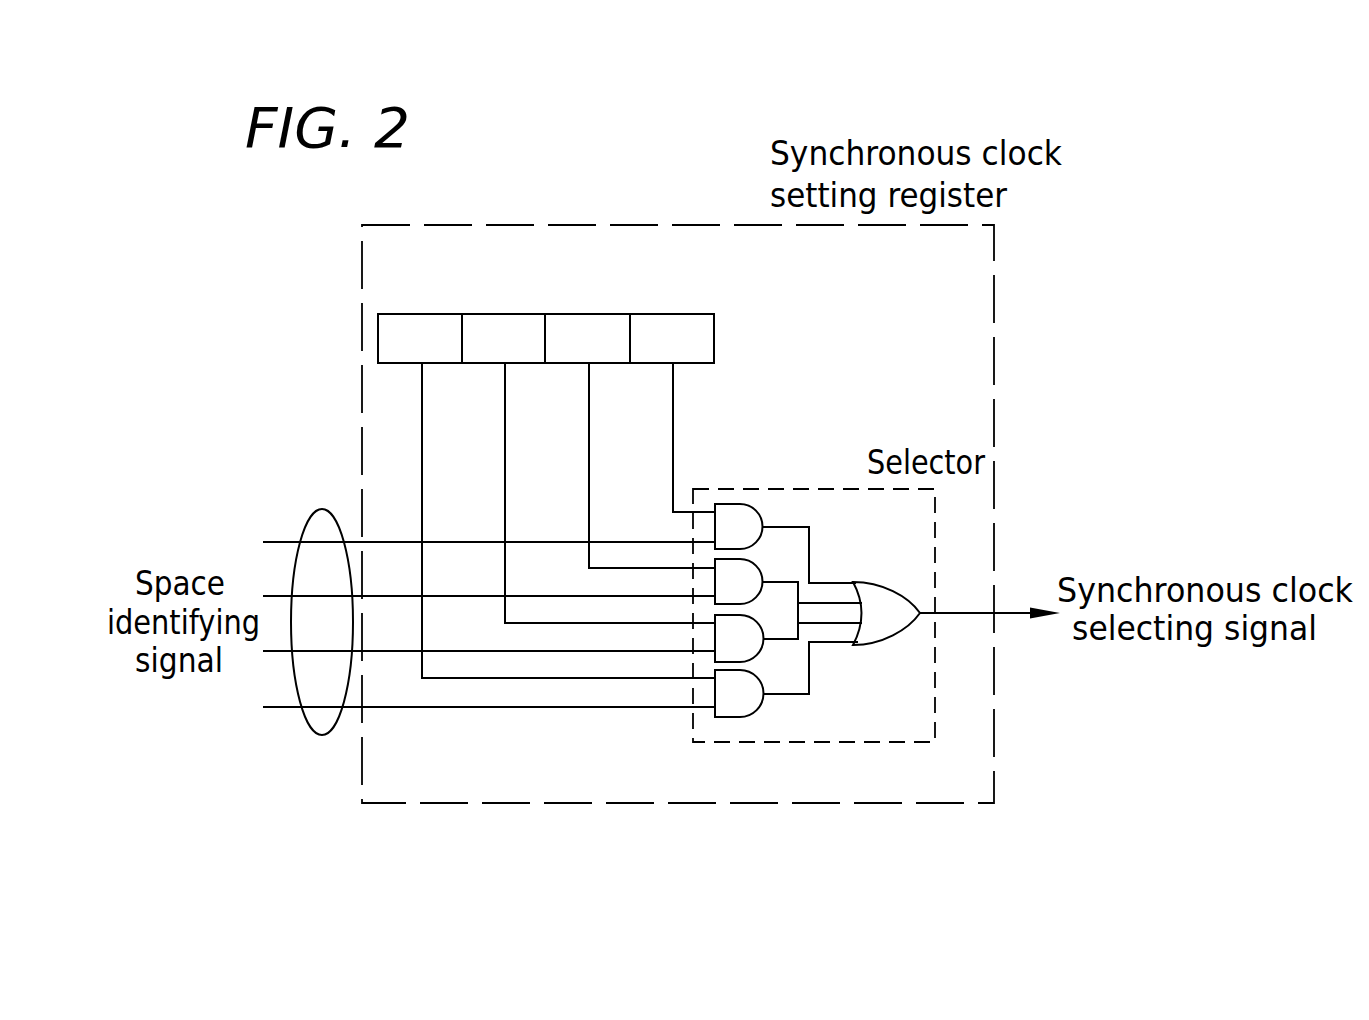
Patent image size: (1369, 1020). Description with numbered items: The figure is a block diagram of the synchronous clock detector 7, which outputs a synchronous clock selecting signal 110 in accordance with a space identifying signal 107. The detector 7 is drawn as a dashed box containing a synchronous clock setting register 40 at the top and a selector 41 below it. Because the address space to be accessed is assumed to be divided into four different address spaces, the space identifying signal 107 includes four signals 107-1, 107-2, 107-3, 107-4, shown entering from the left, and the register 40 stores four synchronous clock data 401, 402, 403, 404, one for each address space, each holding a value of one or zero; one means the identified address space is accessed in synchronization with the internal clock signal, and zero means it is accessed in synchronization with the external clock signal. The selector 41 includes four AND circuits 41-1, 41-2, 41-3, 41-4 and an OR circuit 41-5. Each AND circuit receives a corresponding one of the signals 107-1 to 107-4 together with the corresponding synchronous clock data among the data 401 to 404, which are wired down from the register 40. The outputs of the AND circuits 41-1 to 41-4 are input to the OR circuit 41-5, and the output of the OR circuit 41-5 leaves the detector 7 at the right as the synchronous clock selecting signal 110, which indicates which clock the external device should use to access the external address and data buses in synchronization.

The synchronous clock detector 7 is at (997, 272).
The synchronous clock setting register 40 is at (722, 313).
The synchronous clock data 401 is at (388, 320).
The synchronous clock data 402 is at (473, 320).
The synchronous clock data 403 is at (585, 323).
The synchronous clock data 404 is at (668, 328).
The selector 41 is at (840, 489).
The AND circuit 41-1 is at (732, 718).
The AND circuit 41-2 is at (758, 653).
The AND circuit 41-3 is at (758, 558).
The AND circuit 41-4 is at (732, 504).
The OR circuit 41-5 is at (880, 647).
The space identifying signal 107 is at (327, 737).
The signal 107-1 is at (288, 710).
The signal 107-2 is at (280, 652).
The signal 107-3 is at (281, 596).
The signal 107-4 is at (292, 540).
The synchronous clock selecting signal 110 is at (977, 610).